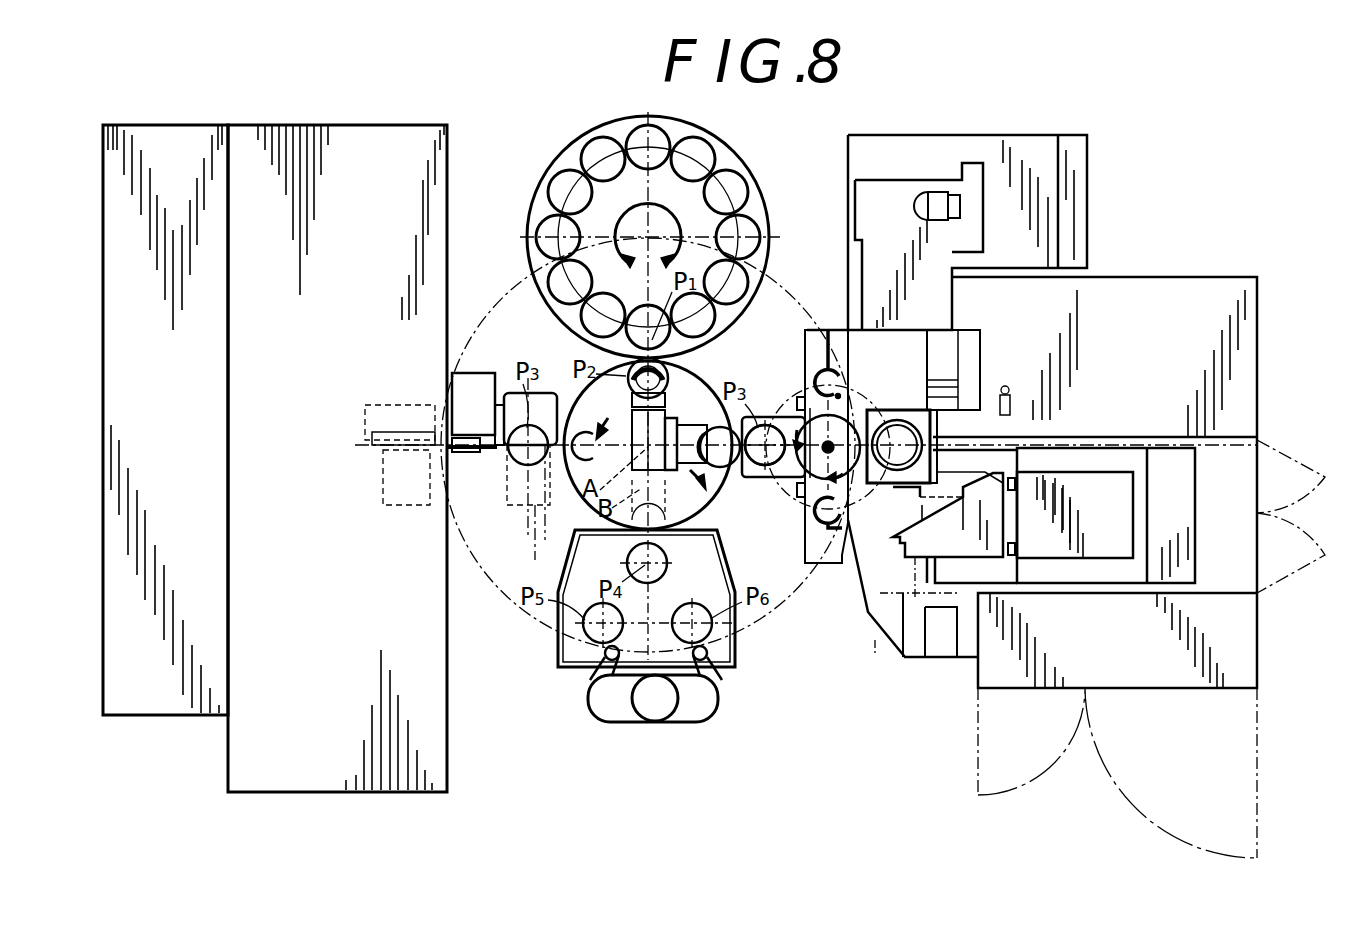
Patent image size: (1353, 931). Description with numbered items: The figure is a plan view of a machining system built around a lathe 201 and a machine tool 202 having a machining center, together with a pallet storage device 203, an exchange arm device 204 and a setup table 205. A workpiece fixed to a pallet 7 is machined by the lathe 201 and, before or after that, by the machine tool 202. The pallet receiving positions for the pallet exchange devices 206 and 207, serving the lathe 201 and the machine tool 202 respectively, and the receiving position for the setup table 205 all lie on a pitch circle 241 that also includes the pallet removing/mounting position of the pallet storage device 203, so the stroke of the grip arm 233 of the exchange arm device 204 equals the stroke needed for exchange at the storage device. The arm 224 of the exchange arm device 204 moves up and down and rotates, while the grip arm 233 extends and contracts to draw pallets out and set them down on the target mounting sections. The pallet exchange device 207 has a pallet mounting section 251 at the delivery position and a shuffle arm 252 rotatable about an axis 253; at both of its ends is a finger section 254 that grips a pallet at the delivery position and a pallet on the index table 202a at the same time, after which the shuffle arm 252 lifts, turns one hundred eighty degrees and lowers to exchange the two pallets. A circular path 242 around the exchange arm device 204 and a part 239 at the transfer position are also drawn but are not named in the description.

The lathe 201 is at (456, 136).
The machine tool 202 is at (1131, 280).
The index table 202a is at (898, 420).
The pallet storage device 203 is at (749, 157).
The exchange arm device 204 is at (688, 380).
The setup table 205 is at (564, 575).
The pallet exchange device 206 is at (498, 446).
The pallet exchange device 207 is at (772, 478).
The pallet 7 is at (538, 528).
The arm 224 is at (678, 480).
The grip arm 233 is at (633, 420).
The rotary gripper 239 is at (636, 386).
The pitch circle 241 is at (742, 366).
The circular path 242 is at (785, 268).
The pallet mounting section 251 is at (766, 425).
The shuffle arm 252 is at (470, 454).
The axis 253 is at (824, 456).
The finger section 254 is at (826, 368).